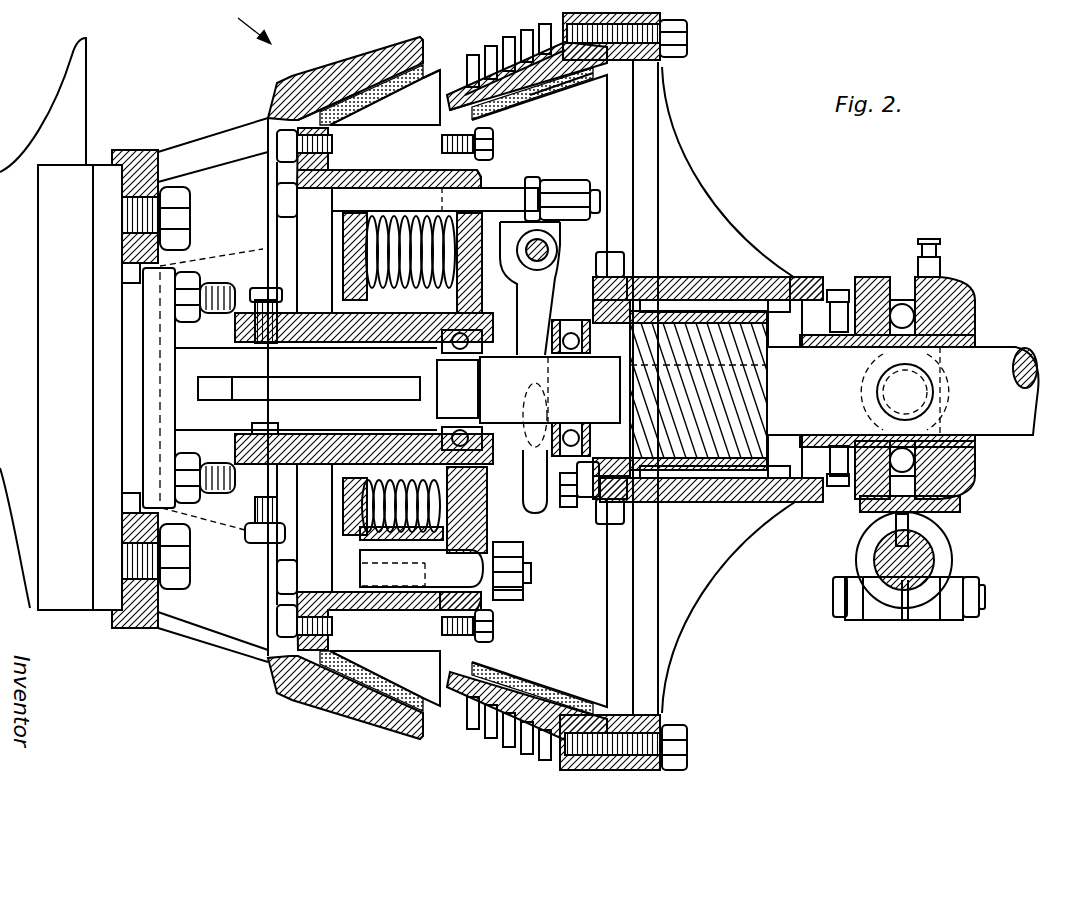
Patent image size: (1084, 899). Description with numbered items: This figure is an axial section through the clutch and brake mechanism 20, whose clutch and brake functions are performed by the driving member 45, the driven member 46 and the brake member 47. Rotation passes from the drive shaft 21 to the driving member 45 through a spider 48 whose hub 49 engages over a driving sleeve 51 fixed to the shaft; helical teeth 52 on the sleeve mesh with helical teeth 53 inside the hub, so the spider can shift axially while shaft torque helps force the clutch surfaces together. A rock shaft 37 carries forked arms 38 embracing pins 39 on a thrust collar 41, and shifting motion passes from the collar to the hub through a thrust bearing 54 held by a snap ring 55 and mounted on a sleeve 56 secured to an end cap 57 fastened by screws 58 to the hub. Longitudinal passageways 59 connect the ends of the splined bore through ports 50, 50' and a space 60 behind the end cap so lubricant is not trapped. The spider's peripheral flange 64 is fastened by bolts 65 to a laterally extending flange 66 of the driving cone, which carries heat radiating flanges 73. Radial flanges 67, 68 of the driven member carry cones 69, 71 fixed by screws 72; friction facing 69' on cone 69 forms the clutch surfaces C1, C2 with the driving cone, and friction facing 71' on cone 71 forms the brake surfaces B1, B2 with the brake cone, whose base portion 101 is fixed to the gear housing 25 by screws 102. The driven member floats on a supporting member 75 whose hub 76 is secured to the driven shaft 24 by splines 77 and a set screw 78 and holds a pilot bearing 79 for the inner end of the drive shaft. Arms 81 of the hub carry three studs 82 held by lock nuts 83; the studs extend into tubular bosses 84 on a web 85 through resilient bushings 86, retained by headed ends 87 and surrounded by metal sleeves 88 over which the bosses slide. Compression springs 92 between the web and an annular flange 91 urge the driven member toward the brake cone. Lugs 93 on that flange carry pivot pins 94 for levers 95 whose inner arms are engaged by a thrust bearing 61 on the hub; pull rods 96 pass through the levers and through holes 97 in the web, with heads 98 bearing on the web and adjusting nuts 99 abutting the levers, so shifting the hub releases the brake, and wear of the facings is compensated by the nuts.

The clutch assembly 20 is at (238, 26).
The drive shaft 21 is at (1008, 355).
The driven shaft 24 is at (193, 418).
The gear housing 25 is at (38, 172).
The rock shaft 37 is at (933, 552).
The forked arms 38 is at (943, 513).
The pins 39 is at (920, 392).
The thrust collar 41 is at (953, 287).
The driving member 45 is at (512, 52).
The driven member 46 is at (393, 172).
The brake member 47 is at (330, 78).
The spider 48 is at (650, 166).
The hub 49 is at (763, 277).
The port 50 is at (642, 378).
The port 50' is at (580, 500).
The driving sleeve 51 is at (772, 388).
The helical splines or teeth 52 is at (770, 403).
The helical splines or teeth 53 is at (782, 503).
The anti-friction thrust bearing 54 is at (965, 300).
The snap ring 55 is at (867, 500).
The sleeve 56 is at (968, 320).
The end cap 57 is at (810, 280).
The screws 58 is at (840, 290).
The longitudinal passageways 59 is at (703, 277).
The space 60 is at (806, 343).
The anti-friction thrust bearing 61 is at (563, 362).
The peripheral flange 64 is at (662, 72).
The bolts 65 is at (688, 38).
The laterally extending flange 66 is at (600, 85).
The radial flange 67 is at (450, 172).
The radial flange 68 is at (332, 174).
The cone 69 is at (532, 391).
The friction facing 69' is at (561, 103).
The cone 71 is at (385, 388).
The friction facing 71' is at (416, 95).
The screws 72 is at (277, 157).
The heat radiating flanges 73 is at (530, 45).
The supporting member 75 is at (280, 300).
The hub 76 is at (372, 343).
The splines 77 is at (305, 387).
The set screw 78 is at (280, 432).
The anti-friction pilot bearing 79 is at (457, 433).
The arms 81 is at (487, 527).
The studs 82 is at (503, 598).
The lock nuts 83 is at (523, 553).
The tubular bosses 84 is at (347, 513).
The web 85 is at (347, 277).
The deformable resilient bushings 86 is at (410, 612).
The headed ends 87 is at (357, 567).
The metal sleeves 88 is at (362, 612).
The annular flange 91 is at (484, 293).
The compression springs 92 is at (410, 263).
The lugs 93 is at (542, 277).
The pivot pins 94 is at (557, 249).
The levers 95 is at (528, 390).
The pull rods 96 is at (477, 200).
The holes 97 is at (348, 233).
The heads 98 is at (347, 220).
The adjusting nuts 99 is at (573, 180).
The base portion 101 is at (135, 158).
The bolts or screws 102 is at (192, 219).
The brake surface B1 is at (372, 65).
The brake surface B2 is at (310, 100).
The clutch surface C1 is at (486, 84).
The clutch surface C2 is at (470, 100).